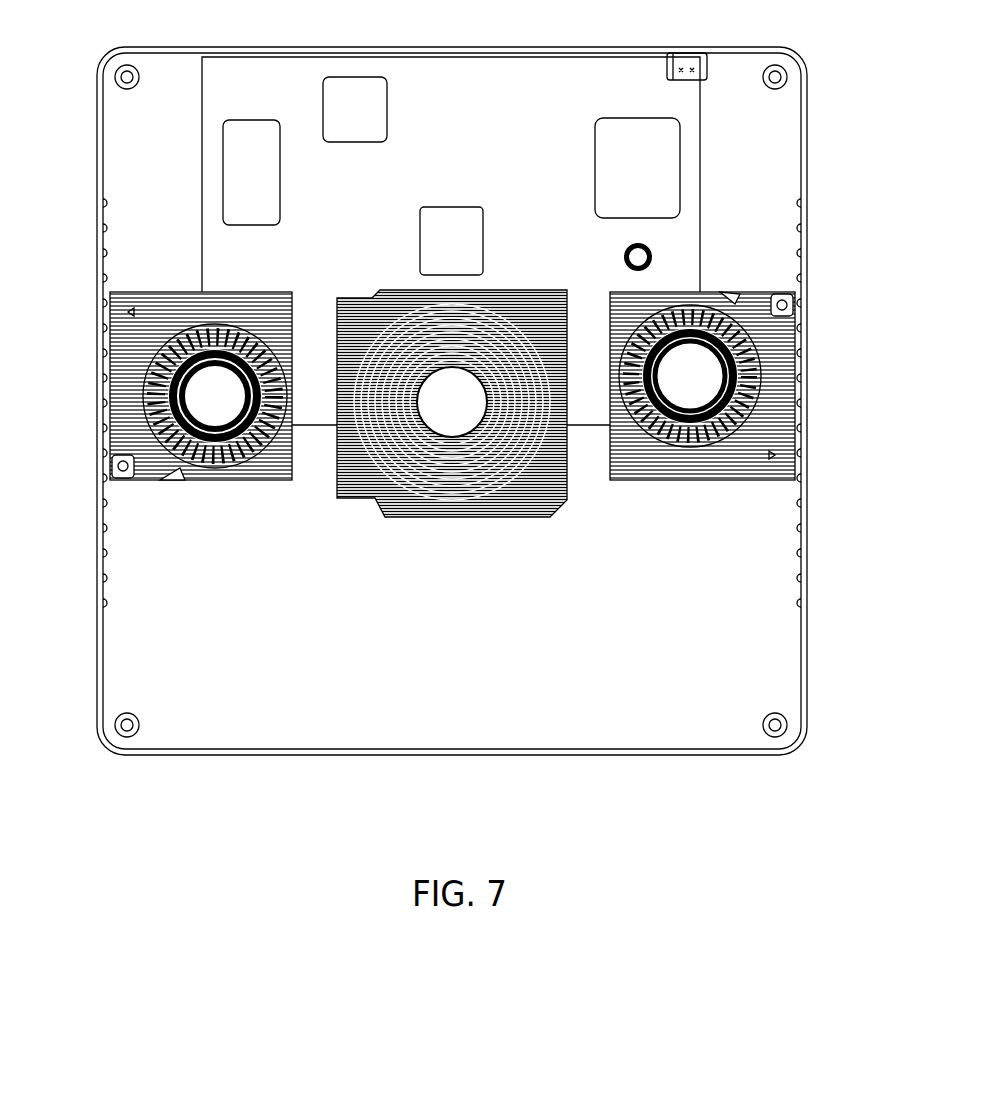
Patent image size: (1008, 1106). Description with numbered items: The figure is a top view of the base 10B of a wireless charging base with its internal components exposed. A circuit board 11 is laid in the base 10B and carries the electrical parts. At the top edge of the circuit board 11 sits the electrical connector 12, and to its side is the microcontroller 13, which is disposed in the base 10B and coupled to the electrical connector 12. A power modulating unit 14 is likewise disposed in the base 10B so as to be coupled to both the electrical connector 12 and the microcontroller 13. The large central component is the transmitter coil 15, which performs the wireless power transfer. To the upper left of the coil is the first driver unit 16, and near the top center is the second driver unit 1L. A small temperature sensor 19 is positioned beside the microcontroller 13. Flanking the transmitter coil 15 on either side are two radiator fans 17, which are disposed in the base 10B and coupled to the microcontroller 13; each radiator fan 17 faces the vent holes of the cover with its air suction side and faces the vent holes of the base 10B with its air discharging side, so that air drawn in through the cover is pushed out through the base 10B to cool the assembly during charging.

The base 10B is at (807, 698).
The circuit board 11 is at (202, 84).
The electrical connector 12 is at (708, 68).
The microcontroller 13 is at (680, 195).
The power modulating unit 14 is at (483, 220).
The transmitter coil 15 is at (525, 517).
The first driver unit 16 is at (280, 205).
The radiator fans 17 is at (268, 480).
The temperature sensor 19 is at (652, 257).
The second driver unit 1L is at (387, 97).